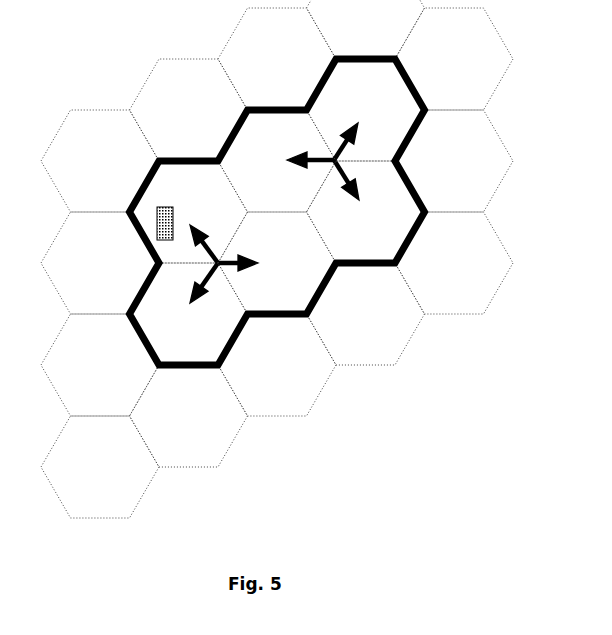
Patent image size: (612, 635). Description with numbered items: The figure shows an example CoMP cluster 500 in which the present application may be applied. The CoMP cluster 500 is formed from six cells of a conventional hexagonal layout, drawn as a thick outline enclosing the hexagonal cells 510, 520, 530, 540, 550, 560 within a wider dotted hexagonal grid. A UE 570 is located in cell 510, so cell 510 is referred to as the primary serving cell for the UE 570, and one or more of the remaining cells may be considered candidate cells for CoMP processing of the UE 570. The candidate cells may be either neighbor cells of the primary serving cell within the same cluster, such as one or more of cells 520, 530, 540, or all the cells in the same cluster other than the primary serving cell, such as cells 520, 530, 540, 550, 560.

The CoMP cluster 500 is at (312, 320).
The cell 510 is at (194, 232).
The cell 520 is at (189, 314).
The cell 530 is at (277, 263).
The cell 540 is at (288, 161).
The cell 550 is at (366, 110).
The cell 560 is at (366, 212).
The UE 570 is at (150, 196).